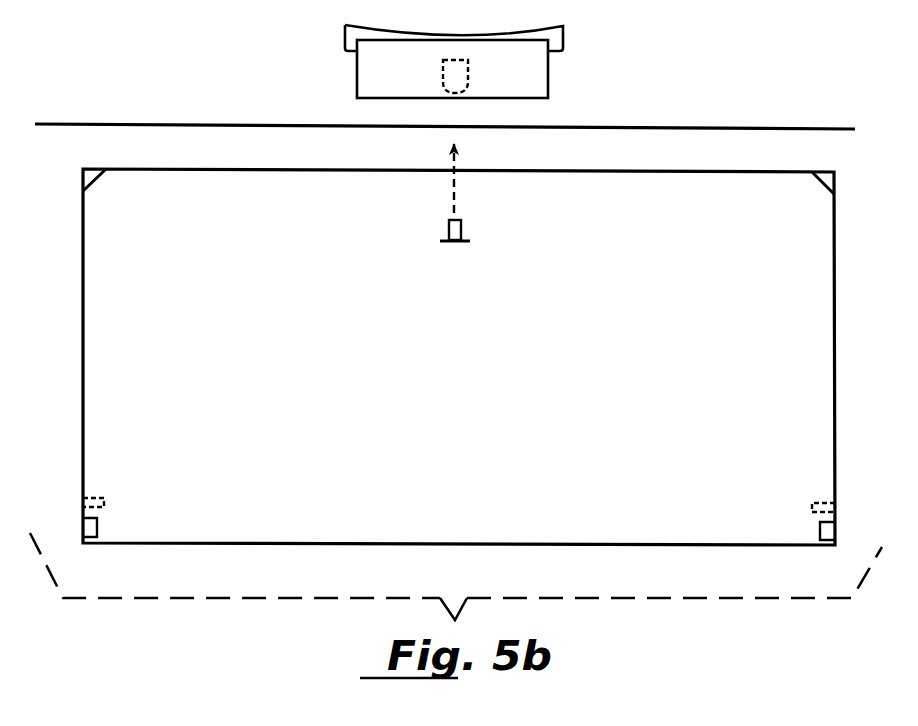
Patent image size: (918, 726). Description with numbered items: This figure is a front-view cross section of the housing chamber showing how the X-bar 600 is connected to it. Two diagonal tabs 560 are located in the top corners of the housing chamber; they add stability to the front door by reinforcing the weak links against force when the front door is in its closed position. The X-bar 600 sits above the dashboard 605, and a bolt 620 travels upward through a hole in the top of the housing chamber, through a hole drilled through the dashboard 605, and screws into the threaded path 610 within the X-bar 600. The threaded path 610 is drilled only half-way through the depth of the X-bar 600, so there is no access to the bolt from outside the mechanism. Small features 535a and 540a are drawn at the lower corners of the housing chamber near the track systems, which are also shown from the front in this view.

The sensor 535a is at (111, 501).
The stop 540a is at (103, 530).
The diagonal tabs 560 is at (104, 188).
The X-bar 600 is at (355, 73).
The dashboard 605 is at (724, 126).
The threaded path 610 is at (472, 75).
The bolt 620 is at (466, 229).